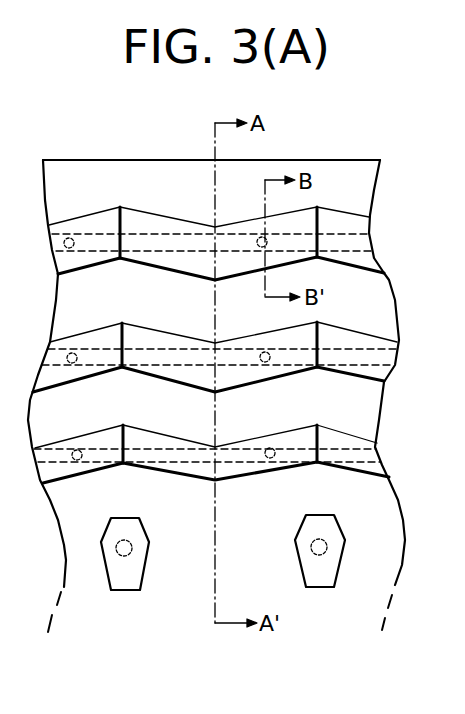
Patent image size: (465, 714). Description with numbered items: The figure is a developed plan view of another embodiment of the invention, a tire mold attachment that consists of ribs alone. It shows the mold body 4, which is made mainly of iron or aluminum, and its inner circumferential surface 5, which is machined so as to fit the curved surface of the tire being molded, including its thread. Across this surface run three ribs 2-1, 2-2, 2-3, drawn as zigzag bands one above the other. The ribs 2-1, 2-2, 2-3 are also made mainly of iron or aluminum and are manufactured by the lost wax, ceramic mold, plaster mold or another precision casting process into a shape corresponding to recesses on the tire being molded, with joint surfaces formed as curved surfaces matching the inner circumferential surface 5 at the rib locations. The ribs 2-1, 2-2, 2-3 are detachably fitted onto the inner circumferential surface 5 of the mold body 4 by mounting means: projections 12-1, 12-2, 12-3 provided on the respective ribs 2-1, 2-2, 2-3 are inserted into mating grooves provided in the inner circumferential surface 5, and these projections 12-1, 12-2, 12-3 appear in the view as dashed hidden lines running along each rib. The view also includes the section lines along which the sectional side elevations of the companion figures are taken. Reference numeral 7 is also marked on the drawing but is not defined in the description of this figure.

The mold body 4 is at (332, 160).
The inner circumferential surface 5 is at (367, 303).
The rib 2-1 is at (362, 225).
The rib 2-2 is at (375, 368).
The rib 2-3 is at (370, 453).
The projection 12-1 is at (173, 243).
The projection 12-2 is at (167, 358).
The projection 12-3 is at (181, 456).
The hole 7 is at (72, 247).